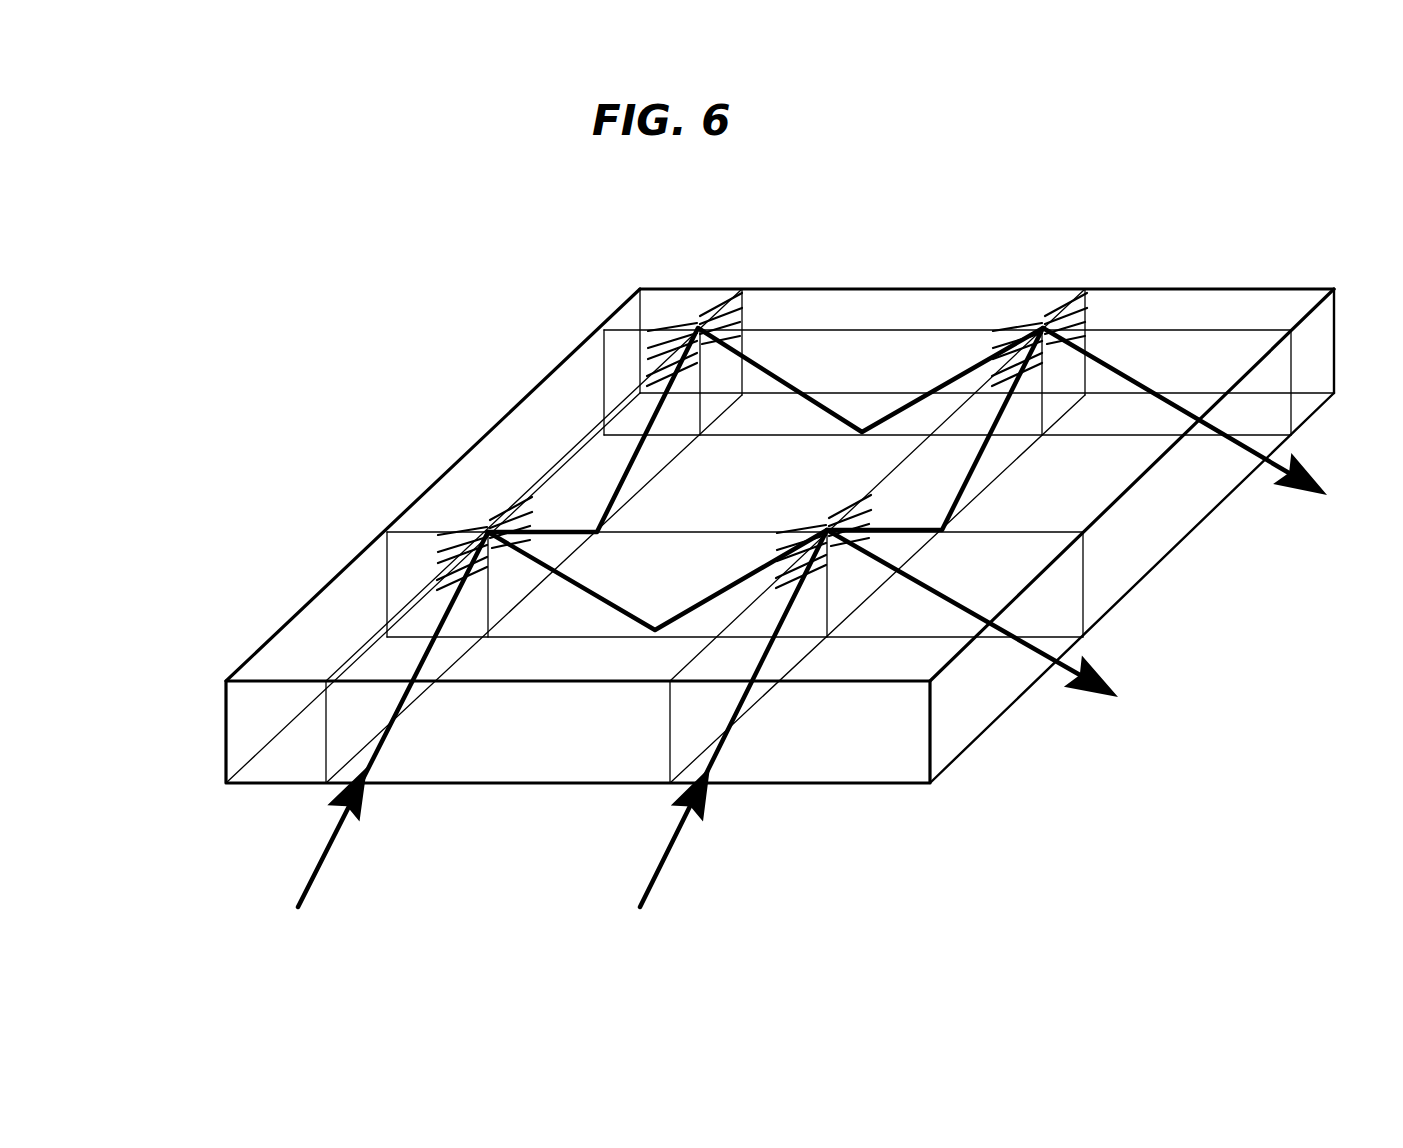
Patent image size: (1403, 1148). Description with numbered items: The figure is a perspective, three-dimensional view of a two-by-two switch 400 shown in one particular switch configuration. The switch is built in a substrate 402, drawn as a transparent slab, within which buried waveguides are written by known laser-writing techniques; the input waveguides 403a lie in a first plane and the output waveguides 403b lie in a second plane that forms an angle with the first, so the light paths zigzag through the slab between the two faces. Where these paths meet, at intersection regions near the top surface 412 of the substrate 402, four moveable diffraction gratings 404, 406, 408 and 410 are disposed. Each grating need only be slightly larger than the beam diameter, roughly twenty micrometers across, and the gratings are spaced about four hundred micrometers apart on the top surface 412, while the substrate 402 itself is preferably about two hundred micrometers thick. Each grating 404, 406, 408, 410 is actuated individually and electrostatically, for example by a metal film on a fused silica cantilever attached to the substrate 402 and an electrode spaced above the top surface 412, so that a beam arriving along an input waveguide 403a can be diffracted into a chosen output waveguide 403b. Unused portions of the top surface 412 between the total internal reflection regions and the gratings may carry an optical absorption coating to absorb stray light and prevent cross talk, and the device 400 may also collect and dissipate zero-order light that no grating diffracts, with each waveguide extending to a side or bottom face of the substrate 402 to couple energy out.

The 2×2 switch 400 is at (1190, 242).
The substrate 402 is at (275, 772).
The input waveguides 403a is at (620, 477).
The output waveguides 403b is at (765, 370).
The moveable diffraction grating 404 is at (1043, 328).
The moveable diffraction grating 406 is at (698, 328).
The moveable diffraction grating 408 is at (827, 530).
The moveable diffraction grating 410 is at (488, 532).
The top surface 412 is at (867, 303).